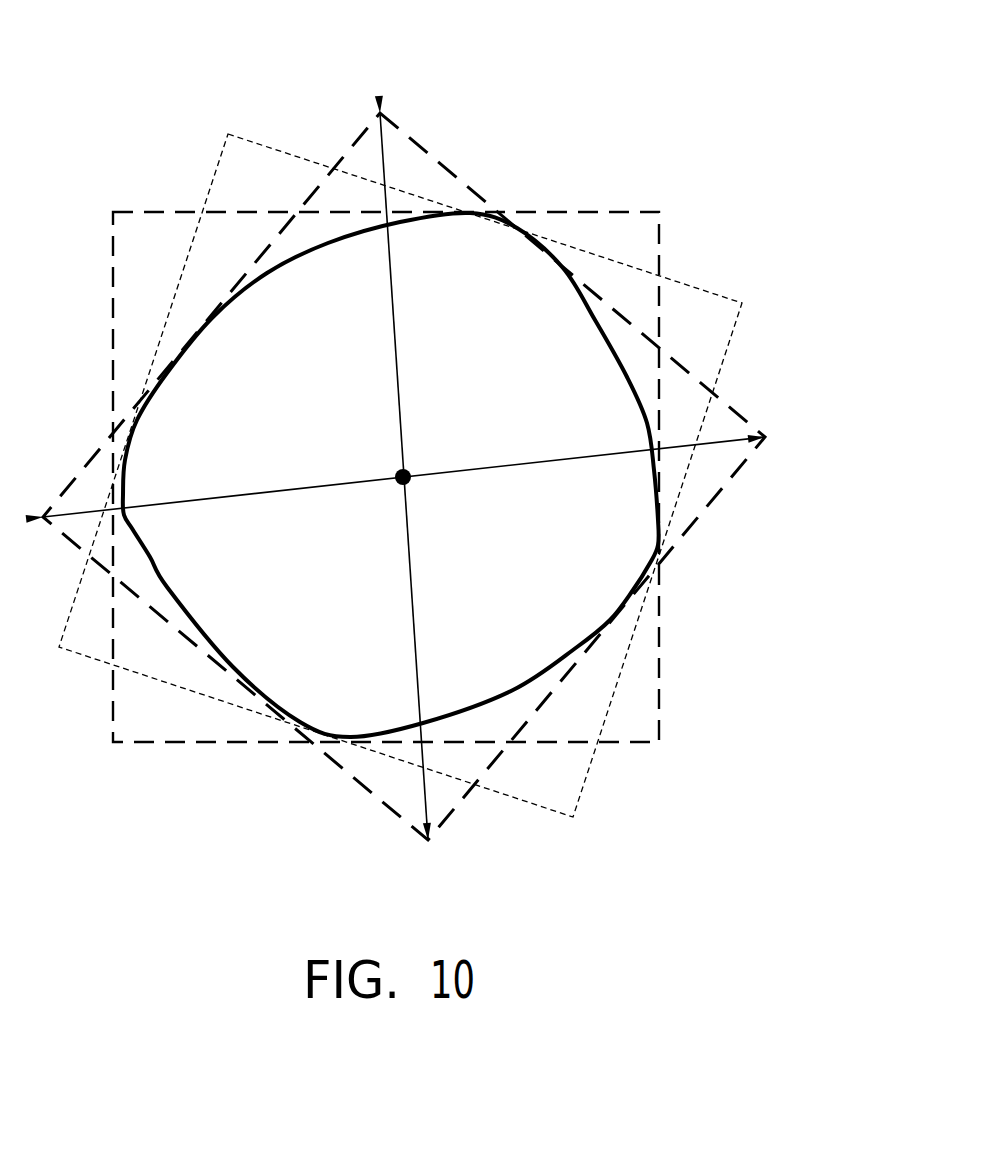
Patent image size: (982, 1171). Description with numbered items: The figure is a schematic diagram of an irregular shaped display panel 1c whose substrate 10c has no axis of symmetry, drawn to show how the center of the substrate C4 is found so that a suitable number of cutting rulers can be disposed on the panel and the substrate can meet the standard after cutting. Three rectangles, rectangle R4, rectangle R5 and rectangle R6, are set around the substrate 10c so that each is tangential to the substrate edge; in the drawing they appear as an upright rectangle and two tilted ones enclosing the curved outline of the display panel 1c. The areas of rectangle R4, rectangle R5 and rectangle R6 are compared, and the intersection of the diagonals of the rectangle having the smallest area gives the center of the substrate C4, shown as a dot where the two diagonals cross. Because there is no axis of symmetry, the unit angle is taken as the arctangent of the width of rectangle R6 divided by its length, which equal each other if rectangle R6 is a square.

The display panel 1c is at (332, 243).
The substrate 10c is at (453, 267).
The rectangle R4 is at (608, 212).
The rectangle R5 is at (723, 297).
The rectangle R6 is at (742, 415).
The center of the substrate C4 is at (410, 482).